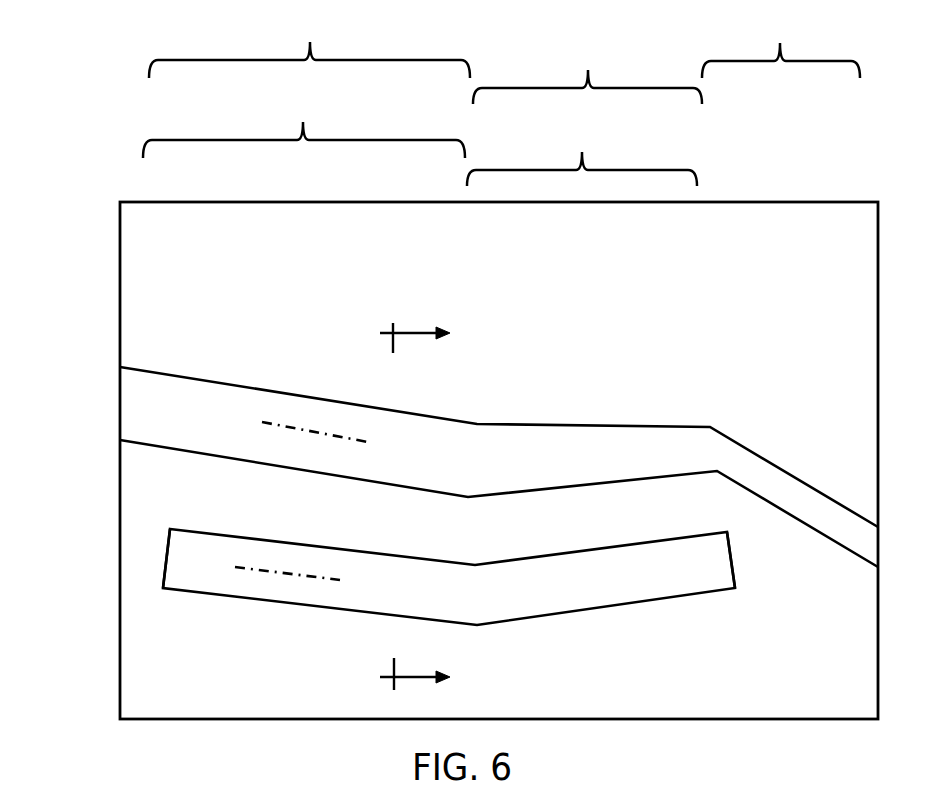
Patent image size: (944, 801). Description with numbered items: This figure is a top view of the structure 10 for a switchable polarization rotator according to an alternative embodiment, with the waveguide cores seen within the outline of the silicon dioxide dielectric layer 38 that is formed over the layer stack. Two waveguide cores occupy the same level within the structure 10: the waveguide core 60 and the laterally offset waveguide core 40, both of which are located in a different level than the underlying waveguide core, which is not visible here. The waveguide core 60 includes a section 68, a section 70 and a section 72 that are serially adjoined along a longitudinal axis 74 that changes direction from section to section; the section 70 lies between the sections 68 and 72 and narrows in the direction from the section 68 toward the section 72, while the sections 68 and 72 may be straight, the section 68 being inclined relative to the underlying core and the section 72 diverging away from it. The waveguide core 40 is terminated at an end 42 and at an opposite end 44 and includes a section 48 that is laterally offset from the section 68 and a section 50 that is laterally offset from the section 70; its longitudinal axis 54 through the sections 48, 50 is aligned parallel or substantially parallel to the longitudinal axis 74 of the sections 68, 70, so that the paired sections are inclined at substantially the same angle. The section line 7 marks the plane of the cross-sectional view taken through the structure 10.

The structure 10 is at (219, 277).
The dielectric layer 38 is at (157, 624).
The waveguide core 40 is at (512, 593).
The end 42 is at (165, 560).
The end 44 is at (732, 555).
The section 48 is at (304, 125).
The section 50 is at (582, 156).
The longitudinal axis 54 is at (293, 573).
The waveguide core 60 is at (555, 440).
The section 68 is at (309, 45).
The section 70 is at (587, 73).
The section 72 is at (781, 45).
The longitudinal axis 74 is at (336, 438).
The section line 7- 7 is at (425, 507).